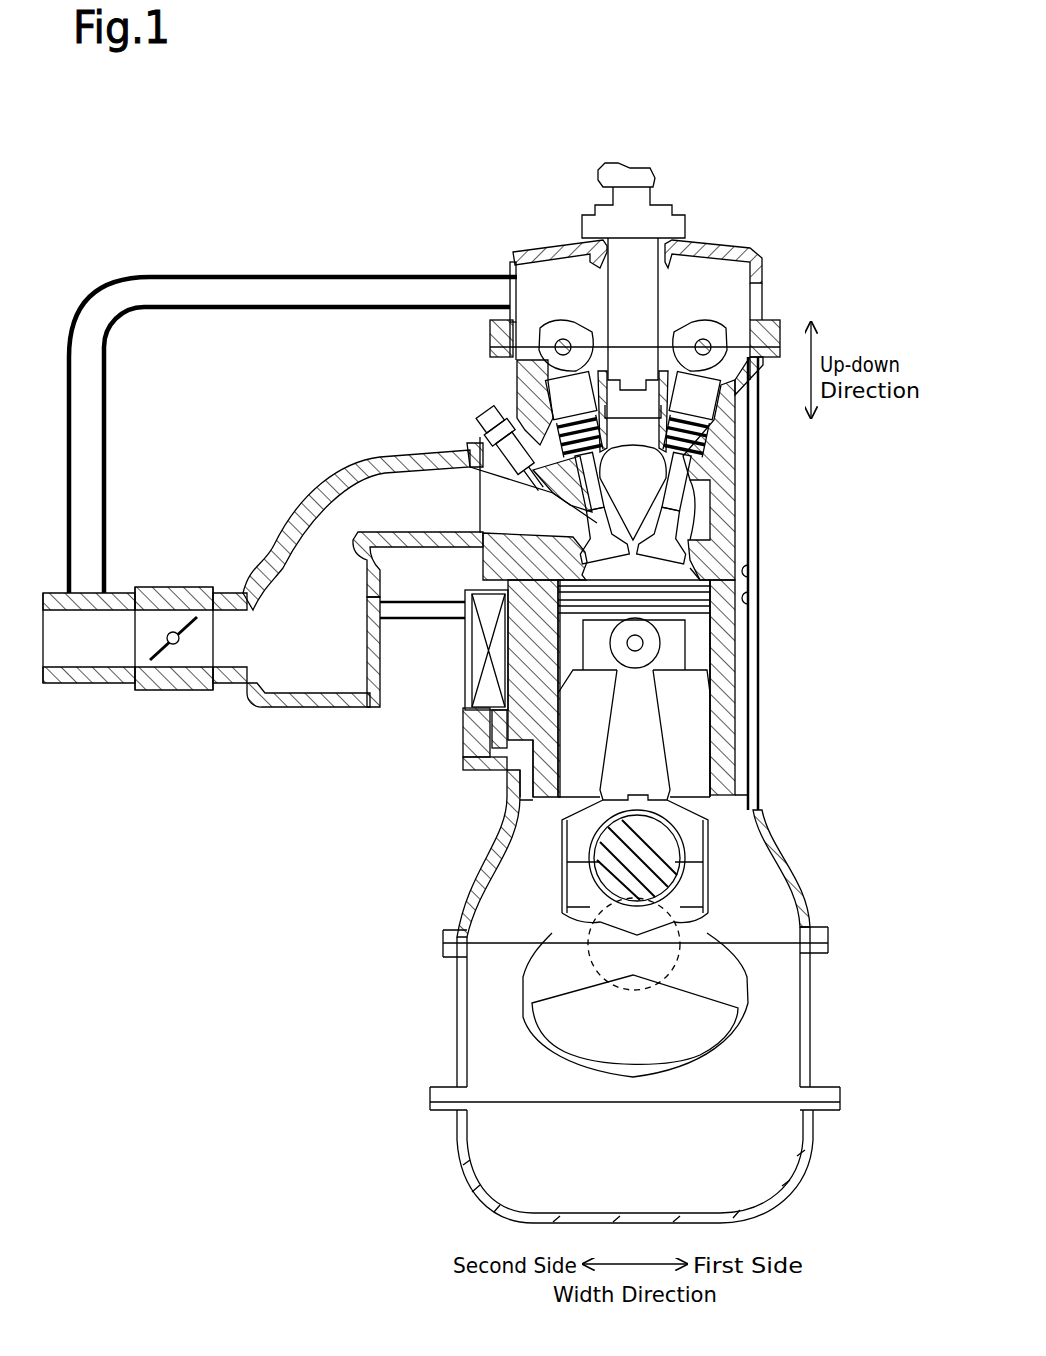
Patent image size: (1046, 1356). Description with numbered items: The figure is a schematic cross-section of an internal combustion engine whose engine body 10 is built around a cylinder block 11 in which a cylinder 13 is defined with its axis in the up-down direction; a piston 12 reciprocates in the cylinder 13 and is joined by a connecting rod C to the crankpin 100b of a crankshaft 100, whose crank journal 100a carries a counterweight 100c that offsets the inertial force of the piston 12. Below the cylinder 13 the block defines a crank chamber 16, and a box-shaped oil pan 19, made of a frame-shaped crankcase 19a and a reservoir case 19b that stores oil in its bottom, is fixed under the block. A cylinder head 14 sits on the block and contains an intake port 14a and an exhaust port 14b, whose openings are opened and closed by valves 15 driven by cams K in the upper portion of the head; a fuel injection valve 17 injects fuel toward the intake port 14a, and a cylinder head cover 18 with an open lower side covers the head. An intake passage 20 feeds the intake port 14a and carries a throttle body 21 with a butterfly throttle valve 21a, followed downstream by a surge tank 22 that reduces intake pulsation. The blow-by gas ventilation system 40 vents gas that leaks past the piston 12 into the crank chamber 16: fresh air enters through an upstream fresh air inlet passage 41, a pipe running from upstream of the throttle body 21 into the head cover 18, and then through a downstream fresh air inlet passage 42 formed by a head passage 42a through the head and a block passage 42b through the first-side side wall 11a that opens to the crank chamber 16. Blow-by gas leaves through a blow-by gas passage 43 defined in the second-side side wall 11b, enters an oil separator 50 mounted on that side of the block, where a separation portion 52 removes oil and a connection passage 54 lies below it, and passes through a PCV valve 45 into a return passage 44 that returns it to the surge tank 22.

The engine body 10 is at (770, 178).
The cylinder block 11 is at (760, 742).
The side wall 11a is at (732, 712).
The side wall 11b is at (504, 812).
The piston 12 is at (670, 672).
The cylinder 13 is at (560, 772).
The cylinder head 14 is at (760, 490).
The intake port 14a is at (507, 483).
The exhaust port 14b is at (705, 506).
The valves 15 is at (573, 495).
The crank chamber 16 is at (492, 905).
The fuel injection valve 17 is at (491, 411).
The cylinder head cover 18 is at (726, 246).
The oil pan 19 is at (372, 1055).
The crankcase 19a is at (457, 1058).
The reservoir case 19b is at (460, 1145).
The intake passage 20 is at (318, 492).
The throttle body 21 is at (166, 690).
The butterfly throttle valve 21a is at (178, 626).
The surge tank 22 is at (310, 710).
The blow-by gas ventilation system 40 is at (100, 262).
The upstream fresh air inlet passage 41 is at (308, 273).
The downstream fresh air inlet passage 42 is at (826, 552).
The head passage 42a is at (753, 570).
The block passage 42b is at (753, 597).
The blow-by gas passage 43 is at (532, 800).
The return passage 44 is at (412, 622).
The PCV valve 45 is at (468, 604).
The oil separator 50 is at (462, 735).
The separation portion 52 is at (462, 708).
The connection passage 54 is at (466, 771).
The crankshaft 100 is at (776, 863).
The crank journal 100a is at (670, 895).
The crankpin 100b is at (668, 866).
The counterweight 100c is at (707, 977).
The cams K is at (540, 345).
The connecting rod C is at (640, 758).